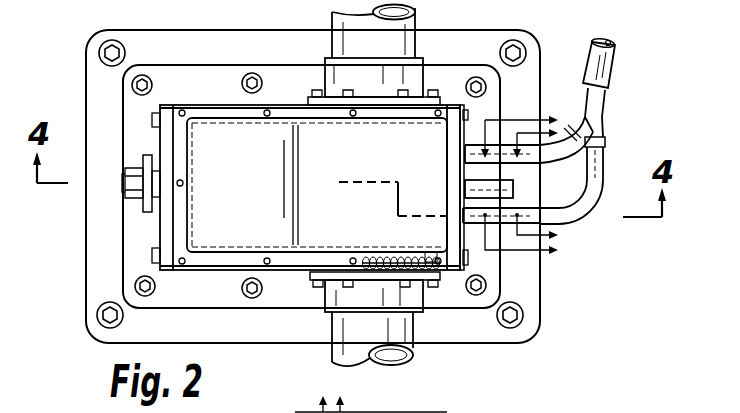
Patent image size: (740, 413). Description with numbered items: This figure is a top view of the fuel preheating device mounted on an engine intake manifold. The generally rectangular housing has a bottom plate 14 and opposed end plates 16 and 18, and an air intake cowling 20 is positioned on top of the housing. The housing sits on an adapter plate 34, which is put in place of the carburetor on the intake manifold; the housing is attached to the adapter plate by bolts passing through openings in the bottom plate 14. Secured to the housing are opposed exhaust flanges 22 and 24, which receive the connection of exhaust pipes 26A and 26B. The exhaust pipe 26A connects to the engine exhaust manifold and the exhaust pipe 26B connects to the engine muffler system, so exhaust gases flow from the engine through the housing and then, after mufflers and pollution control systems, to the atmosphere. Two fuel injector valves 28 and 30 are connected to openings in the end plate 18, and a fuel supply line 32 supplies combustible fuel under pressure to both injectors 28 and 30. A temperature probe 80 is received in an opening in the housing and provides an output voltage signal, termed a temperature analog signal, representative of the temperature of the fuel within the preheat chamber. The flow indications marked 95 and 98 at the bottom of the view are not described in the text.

The bottom plate 14 is at (452, 83).
The end plate 16 is at (173, 220).
The end plate 18 is at (453, 125).
The air intake cowling 20 is at (343, 164).
The exhaust flange 22 is at (325, 280).
The exhaust flange 24 is at (318, 97).
The exhaust pipe 26A is at (332, 350).
The exhaust pipe 26B is at (340, 26).
The fuel injector valve 28 is at (502, 215).
The fuel injector valve 30 is at (507, 155).
The fuel supply line 32 is at (610, 55).
The adapter plate 34 is at (493, 48).
The temperature probe 80 is at (478, 186).
The air flow 95 is at (390, 412).
The air flow 98 is at (302, 412).